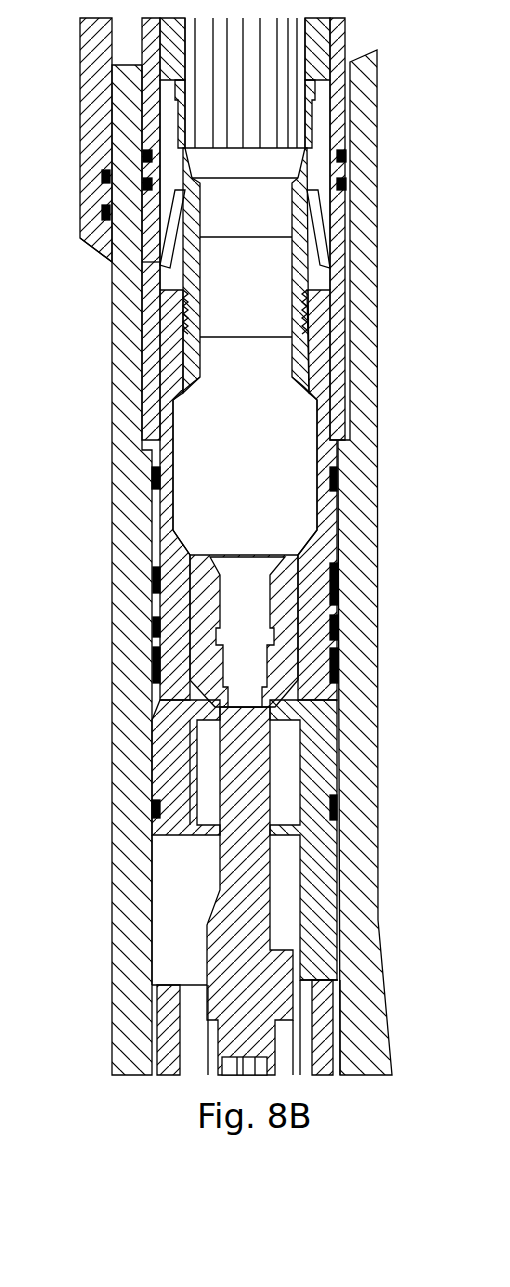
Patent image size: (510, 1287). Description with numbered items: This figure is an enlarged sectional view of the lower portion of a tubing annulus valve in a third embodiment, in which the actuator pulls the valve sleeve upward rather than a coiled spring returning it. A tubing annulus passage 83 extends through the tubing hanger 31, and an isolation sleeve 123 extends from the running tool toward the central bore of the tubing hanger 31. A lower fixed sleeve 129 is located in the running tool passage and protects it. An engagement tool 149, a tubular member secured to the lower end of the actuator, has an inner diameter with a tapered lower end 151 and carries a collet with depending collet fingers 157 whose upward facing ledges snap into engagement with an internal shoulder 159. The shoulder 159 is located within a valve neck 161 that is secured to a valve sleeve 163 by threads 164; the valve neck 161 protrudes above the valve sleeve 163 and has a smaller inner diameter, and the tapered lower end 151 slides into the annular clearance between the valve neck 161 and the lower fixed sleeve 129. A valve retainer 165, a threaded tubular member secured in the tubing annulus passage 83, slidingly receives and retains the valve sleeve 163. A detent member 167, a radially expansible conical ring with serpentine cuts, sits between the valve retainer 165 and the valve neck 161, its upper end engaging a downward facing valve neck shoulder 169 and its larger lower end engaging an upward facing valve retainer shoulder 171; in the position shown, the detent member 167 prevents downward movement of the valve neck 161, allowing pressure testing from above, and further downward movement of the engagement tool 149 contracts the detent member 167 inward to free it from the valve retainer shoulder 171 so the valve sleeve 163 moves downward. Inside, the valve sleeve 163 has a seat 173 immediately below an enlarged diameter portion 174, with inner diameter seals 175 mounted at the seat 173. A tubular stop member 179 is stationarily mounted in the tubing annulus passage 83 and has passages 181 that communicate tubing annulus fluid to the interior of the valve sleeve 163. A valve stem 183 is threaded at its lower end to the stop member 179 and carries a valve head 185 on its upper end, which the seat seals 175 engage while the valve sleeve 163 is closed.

The engagement tool 149 is at (320, 52).
The lower fixed sleeve 129 is at (165, 88).
The collet fingers 157 is at (190, 135).
The isolation sleeve 123 is at (100, 170).
The tubing hanger 31 is at (350, 177).
The internal shoulder or profile 159 is at (320, 117).
The valve neck 161 is at (315, 145).
The tapered lower end 151 is at (322, 200).
The detent member 167 is at (320, 240).
The valve neck shoulder 169 is at (165, 262).
The valve retainer shoulder 171 is at (185, 268).
The threads 164 is at (300, 320).
The valve sleeve 163 is at (355, 360).
The valve retainer 165 is at (340, 410).
The tubing annulus passage 83 is at (152, 498).
The enlarged diameter portion 174 is at (300, 500).
The seat 173 is at (213, 557).
The inner diameter seals 175 is at (190, 605).
The tubular stop member 179 is at (334, 585).
The valve head 185 is at (290, 700).
The valve stem 183 is at (265, 890).
The passages 181 is at (295, 1000).